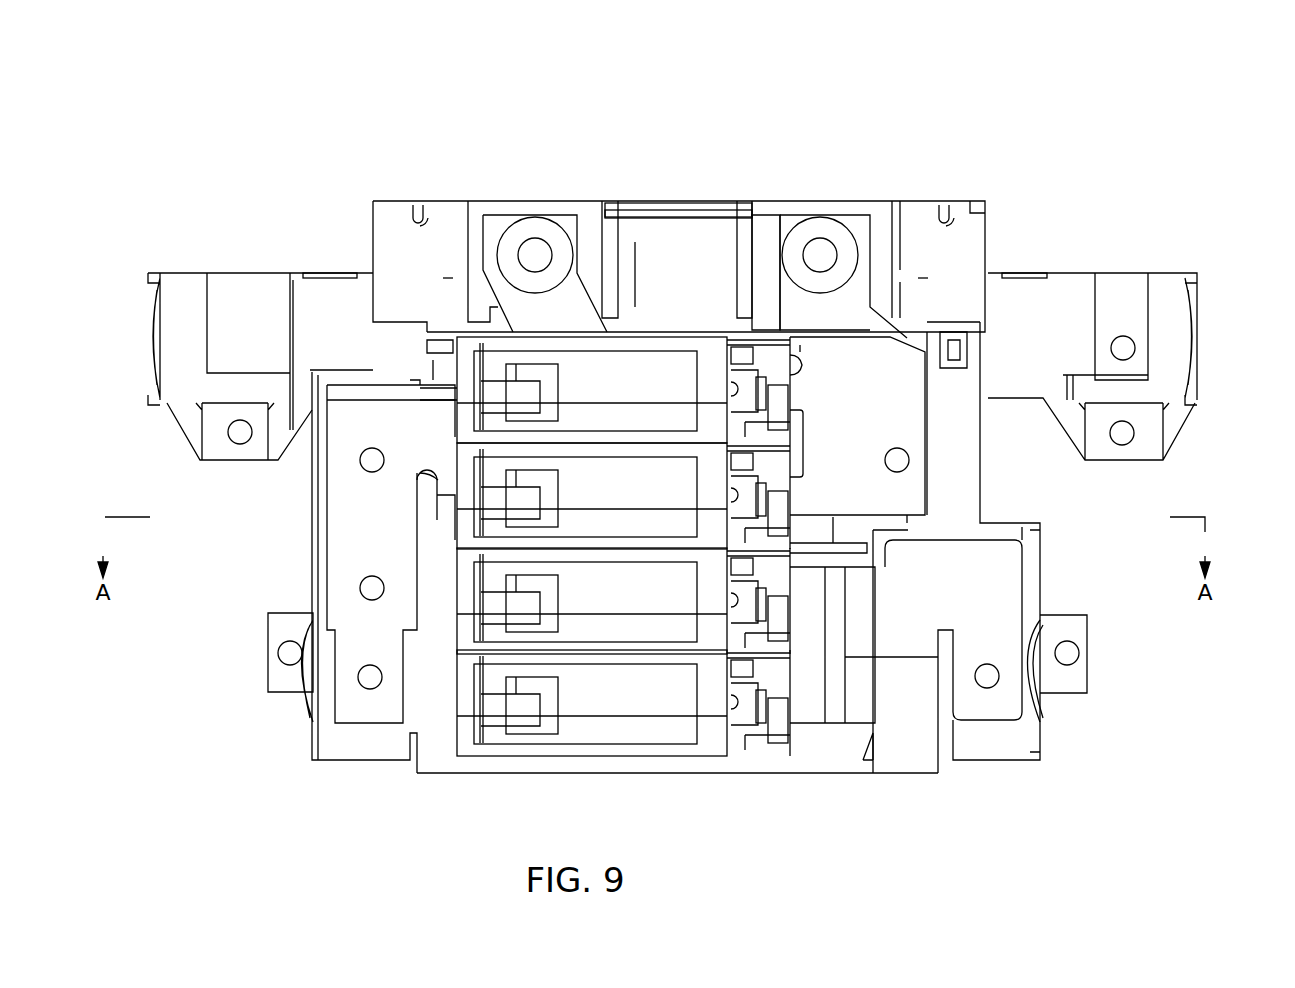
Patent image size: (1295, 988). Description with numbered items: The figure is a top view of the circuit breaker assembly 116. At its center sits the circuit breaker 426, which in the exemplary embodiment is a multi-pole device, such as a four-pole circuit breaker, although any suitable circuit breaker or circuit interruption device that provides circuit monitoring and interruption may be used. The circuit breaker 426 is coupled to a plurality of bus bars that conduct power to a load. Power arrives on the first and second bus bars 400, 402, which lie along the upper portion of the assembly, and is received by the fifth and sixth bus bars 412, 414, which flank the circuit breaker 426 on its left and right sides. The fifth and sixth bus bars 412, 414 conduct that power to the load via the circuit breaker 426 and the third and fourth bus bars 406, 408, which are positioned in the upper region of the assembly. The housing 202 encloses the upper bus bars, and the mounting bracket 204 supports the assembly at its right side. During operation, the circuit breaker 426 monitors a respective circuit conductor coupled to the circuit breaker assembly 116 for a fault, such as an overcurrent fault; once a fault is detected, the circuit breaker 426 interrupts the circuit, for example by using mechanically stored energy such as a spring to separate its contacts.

The circuit breaker assembly 116 is at (1160, 92).
The housing 202 is at (1033, 240).
The mounting bracket 204 is at (945, 793).
The first bus bar 400 is at (590, 205).
The second bus bar 402 is at (798, 228).
The third bus bar 406 is at (493, 228).
The fourth bus bar 408 is at (858, 232).
The fifth bus bar 412 is at (343, 532).
The sixth bus bar 414 is at (988, 595).
The circuit breaker 426 is at (673, 742).